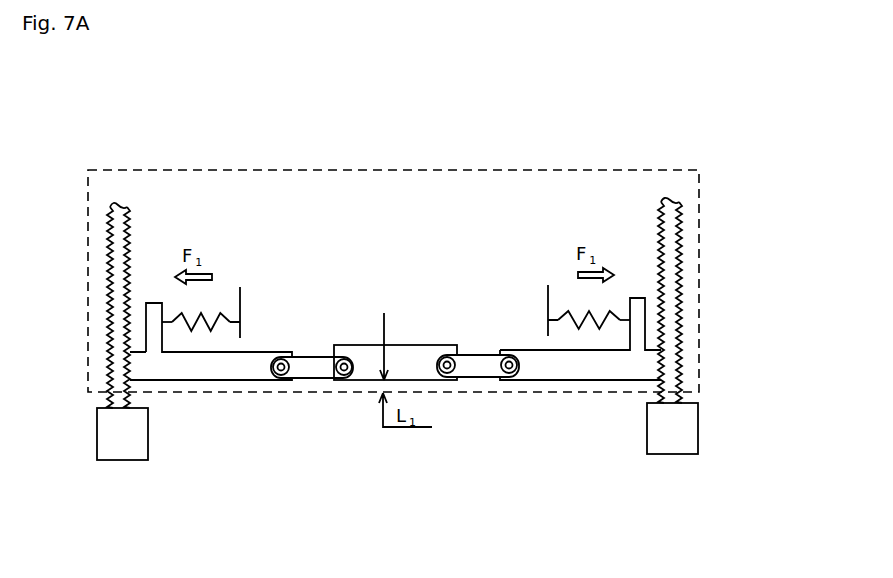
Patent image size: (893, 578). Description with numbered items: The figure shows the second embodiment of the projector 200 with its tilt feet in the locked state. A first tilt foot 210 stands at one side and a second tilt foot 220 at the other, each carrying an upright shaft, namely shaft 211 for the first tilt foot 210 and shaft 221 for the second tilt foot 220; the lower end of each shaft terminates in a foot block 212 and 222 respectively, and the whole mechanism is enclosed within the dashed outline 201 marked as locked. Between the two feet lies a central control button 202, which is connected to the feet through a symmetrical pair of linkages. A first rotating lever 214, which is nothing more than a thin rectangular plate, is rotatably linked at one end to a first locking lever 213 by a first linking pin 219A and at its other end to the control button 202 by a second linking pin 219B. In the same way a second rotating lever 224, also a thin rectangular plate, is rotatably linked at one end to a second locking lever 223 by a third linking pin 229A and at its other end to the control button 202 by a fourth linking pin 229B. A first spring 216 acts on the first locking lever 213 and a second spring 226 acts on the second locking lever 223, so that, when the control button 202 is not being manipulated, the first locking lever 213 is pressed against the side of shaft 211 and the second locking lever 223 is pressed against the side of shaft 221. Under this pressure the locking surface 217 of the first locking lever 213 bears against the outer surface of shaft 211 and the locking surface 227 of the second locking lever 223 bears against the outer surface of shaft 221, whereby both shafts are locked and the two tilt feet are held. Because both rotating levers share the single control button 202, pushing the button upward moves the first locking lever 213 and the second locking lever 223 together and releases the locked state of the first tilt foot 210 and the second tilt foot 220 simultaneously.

The projector 200 is at (527, 156).
The housing frame 201 is at (390, 170).
The control button 202 is at (407, 356).
The first tilt foot 210 is at (683, 262).
The shaft 211 is at (669, 201).
The right weight block 212 is at (675, 444).
The first locking lever 213 is at (600, 375).
The first rotating lever 214 is at (483, 357).
The first spring 216 is at (605, 330).
The locking surface 217 is at (686, 364).
The first linking pin 219A is at (506, 381).
The second linking pin 219B is at (442, 382).
The second tilt foot 220 is at (110, 262).
The shaft 221 is at (117, 206).
The left weight block 222 is at (122, 450).
The second locking lever 223 is at (219, 376).
The second rotating lever 224 is at (318, 360).
The second spring 226 is at (215, 332).
The locking surface 227 is at (106, 370).
The third linking pin 229A is at (278, 382).
The fourth linking pin 229B is at (340, 382).